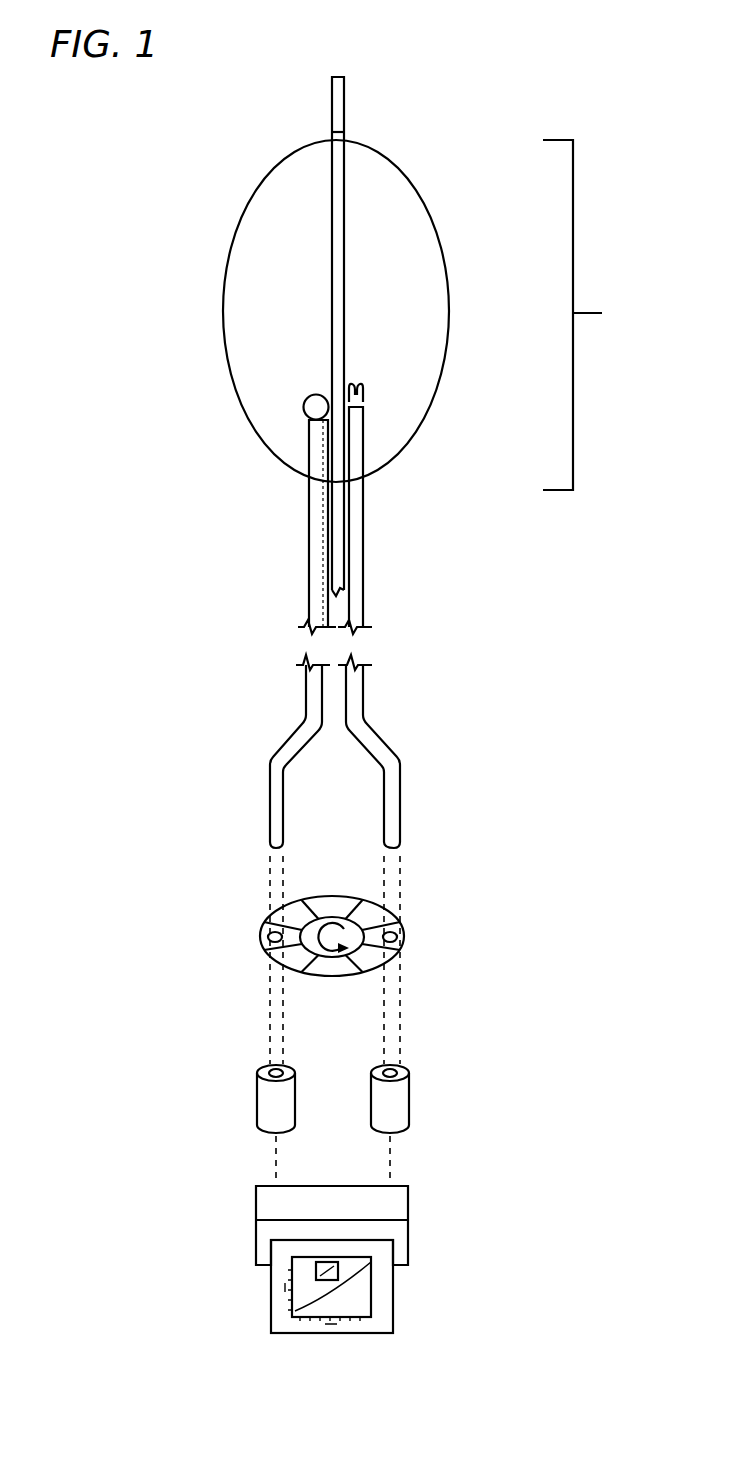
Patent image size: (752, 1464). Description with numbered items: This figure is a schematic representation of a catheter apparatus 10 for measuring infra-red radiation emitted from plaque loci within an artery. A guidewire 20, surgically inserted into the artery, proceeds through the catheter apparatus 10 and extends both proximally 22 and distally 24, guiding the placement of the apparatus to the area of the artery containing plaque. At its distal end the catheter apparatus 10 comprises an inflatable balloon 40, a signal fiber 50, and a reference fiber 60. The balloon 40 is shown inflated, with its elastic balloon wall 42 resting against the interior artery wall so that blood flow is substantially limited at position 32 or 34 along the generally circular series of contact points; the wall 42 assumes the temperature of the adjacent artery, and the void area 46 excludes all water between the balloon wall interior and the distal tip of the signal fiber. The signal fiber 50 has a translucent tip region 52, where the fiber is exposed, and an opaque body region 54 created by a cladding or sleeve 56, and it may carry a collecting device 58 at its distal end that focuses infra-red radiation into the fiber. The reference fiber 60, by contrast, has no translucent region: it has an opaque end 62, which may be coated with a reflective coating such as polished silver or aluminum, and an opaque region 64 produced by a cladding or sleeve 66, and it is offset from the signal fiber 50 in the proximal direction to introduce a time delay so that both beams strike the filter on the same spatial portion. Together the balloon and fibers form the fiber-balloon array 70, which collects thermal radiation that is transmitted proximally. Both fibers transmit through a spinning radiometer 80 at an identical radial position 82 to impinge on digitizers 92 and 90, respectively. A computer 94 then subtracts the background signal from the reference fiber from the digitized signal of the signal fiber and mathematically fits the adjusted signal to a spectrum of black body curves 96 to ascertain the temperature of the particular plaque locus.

The catheter apparatus 10 is at (506, 76).
The guidewire 20 is at (335, 100).
The proximal extension of guidewire 22 is at (335, 515).
The distal extension of guidewire 24 is at (338, 132).
The blood flow limiting position 32 is at (395, 458).
The blood flow limiting position 34 is at (410, 175).
The inflatable balloon 40 is at (410, 240).
The balloon wall 42 is at (448, 318).
The void area 46 is at (400, 398).
The signal fiber 50 is at (357, 447).
The translucent tip region 52 is at (346, 388).
The opaque body region 54 is at (353, 558).
The cladding or sleeve 56 is at (363, 698).
The collecting device 58 is at (358, 383).
The reference fiber 60 is at (317, 448).
The opaque end 62 is at (304, 402).
The opaque region 64 is at (317, 560).
The cladding or sleeve 66 is at (273, 758).
The fiber-balloon array 70 is at (590, 315).
The spinning radiometer 80 is at (452, 909).
The identical radial position 82 is at (397, 938).
The digitizer 90 is at (257, 1093).
The digitizer 92 is at (410, 1092).
The computer 94 is at (395, 1202).
The black body curves 96 is at (362, 1295).